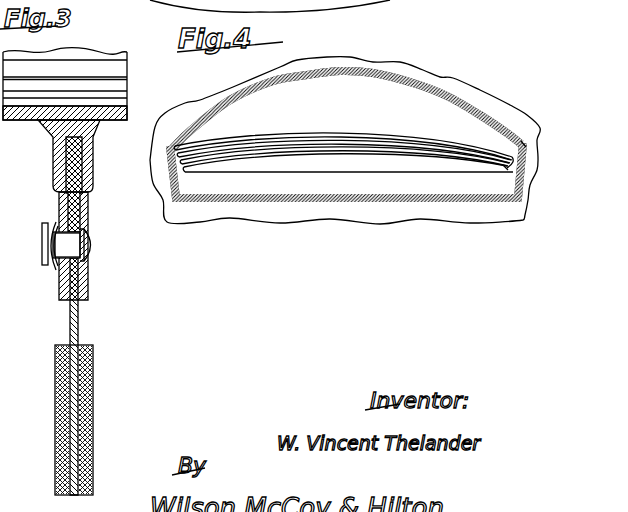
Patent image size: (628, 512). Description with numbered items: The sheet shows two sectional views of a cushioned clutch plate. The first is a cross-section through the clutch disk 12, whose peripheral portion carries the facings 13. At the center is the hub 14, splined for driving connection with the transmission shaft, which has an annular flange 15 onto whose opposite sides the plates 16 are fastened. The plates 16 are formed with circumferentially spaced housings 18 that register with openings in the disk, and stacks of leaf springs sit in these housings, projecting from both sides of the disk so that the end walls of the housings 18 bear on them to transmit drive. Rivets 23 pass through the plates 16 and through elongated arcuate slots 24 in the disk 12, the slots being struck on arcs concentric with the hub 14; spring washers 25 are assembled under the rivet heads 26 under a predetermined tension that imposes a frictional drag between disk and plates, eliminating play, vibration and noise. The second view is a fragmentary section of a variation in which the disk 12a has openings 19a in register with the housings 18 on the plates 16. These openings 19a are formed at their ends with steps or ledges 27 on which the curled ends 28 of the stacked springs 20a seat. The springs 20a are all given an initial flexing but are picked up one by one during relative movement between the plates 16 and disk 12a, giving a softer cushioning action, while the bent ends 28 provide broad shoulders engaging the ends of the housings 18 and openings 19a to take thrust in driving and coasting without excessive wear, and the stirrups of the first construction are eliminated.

In FIG. 3, the clutch disk 12 is at (82, 207).
In FIG. 4, the disk 12a is at (452, 78).
In FIG. 3, the facings 13 is at (93, 397).
In FIG. 3, the center hub 14 is at (118, 70).
In FIG. 3, the annular flange 15 is at (93, 177).
In FIG. 3, the plates 16 is at (99, 274).
In FIG. 4, the plates 16 is at (527, 173).
In FIG. 4, the housings 18 is at (502, 122).
In FIG. 4, the openings 19a is at (430, 173).
In FIG. 4, the springs 20a is at (353, 133).
In FIG. 3, the rivets 23 is at (95, 243).
In FIG. 3, the elongated arcuate slots 24 is at (77, 227).
In FIG. 3, the spring washers 25 is at (58, 270).
In FIG. 3, the heads 26 is at (40, 248).
In FIG. 4, the steps or ledges 27 is at (503, 167).
In FIG. 4, the curled ends 28 is at (523, 142).